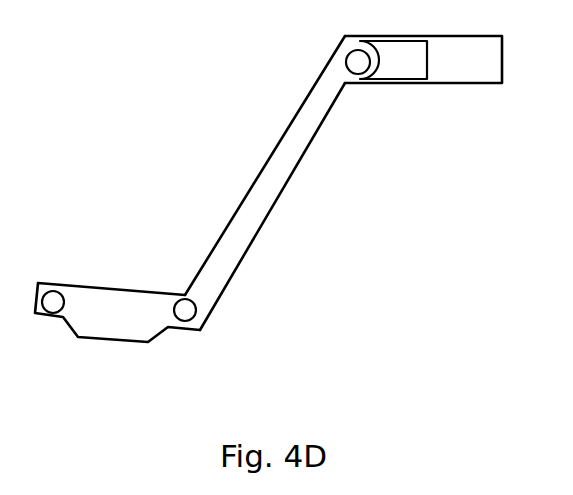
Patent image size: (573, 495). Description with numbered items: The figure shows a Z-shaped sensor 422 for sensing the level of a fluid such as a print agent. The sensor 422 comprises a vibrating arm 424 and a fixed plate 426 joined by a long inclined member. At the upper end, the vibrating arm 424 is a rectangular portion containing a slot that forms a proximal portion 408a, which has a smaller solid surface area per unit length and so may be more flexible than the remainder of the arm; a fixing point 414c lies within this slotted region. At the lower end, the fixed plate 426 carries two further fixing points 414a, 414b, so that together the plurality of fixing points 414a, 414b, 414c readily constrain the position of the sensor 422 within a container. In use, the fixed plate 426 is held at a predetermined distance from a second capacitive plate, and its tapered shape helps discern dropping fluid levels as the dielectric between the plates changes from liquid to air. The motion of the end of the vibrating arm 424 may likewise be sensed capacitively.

The Z-shaped sensor 422 is at (128, 79).
The vibrating arm 424 is at (453, 70).
The proximal portion 408a is at (420, 83).
The fixing point 414c is at (357, 66).
The fixing point 414a is at (53, 298).
The fixing point 414b is at (181, 300).
The fixed plate 426 is at (125, 322).